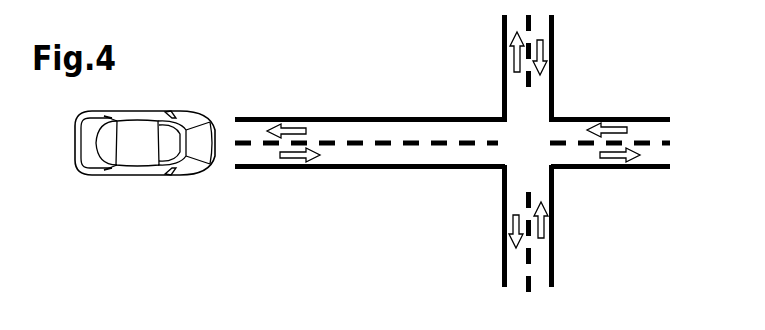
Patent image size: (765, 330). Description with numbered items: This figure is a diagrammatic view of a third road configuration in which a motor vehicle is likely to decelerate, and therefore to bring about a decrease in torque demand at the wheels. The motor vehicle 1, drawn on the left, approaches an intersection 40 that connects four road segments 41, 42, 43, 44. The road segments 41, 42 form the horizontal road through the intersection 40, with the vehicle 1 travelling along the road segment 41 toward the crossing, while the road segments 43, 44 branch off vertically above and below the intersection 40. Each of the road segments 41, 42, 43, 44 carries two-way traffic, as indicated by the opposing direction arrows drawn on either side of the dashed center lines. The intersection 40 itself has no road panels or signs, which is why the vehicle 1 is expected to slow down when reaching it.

The motor vehicle 1 is at (143, 178).
The intersection 40 is at (527, 139).
The road segment 41 is at (392, 170).
The road segment 42 is at (645, 170).
The road segment 43 is at (557, 97).
The road segment 44 is at (554, 247).